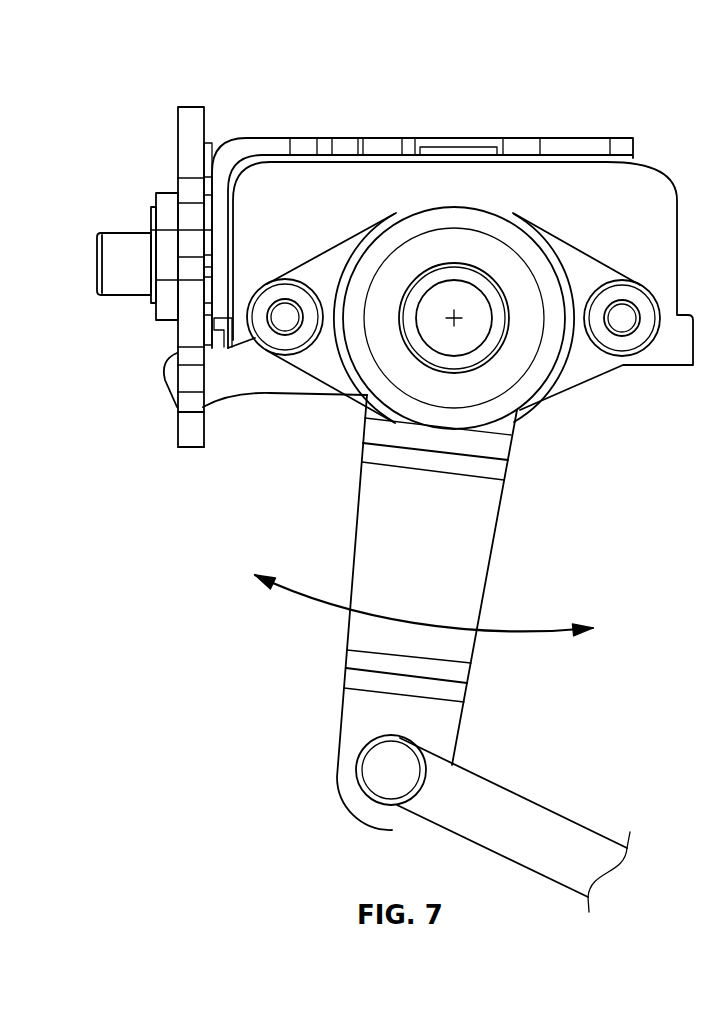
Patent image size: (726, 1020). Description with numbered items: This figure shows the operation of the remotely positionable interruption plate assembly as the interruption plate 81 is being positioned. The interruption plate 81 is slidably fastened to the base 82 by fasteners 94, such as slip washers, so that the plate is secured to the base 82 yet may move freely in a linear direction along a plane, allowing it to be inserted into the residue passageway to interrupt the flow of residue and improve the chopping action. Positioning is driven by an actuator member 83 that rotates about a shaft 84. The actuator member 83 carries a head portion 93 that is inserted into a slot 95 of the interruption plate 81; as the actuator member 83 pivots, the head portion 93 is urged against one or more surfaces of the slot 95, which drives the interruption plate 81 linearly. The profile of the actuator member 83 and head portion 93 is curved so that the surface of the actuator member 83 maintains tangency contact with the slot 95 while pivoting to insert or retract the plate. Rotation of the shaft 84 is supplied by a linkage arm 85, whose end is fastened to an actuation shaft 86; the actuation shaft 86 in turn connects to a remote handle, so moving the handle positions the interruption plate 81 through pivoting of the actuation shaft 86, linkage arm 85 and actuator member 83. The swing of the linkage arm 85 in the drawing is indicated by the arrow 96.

The interruption plate 81 is at (188, 138).
The base 82 is at (266, 146).
The actuator member 83 is at (257, 383).
The shaft 84 is at (455, 318).
The linkage arm 85 is at (470, 547).
The actuation shaft 86 is at (533, 825).
The head portion 93 is at (165, 375).
The fasteners 94 is at (135, 245).
The slot 95 is at (198, 415).
The pivot direction arrow 96 is at (318, 600).